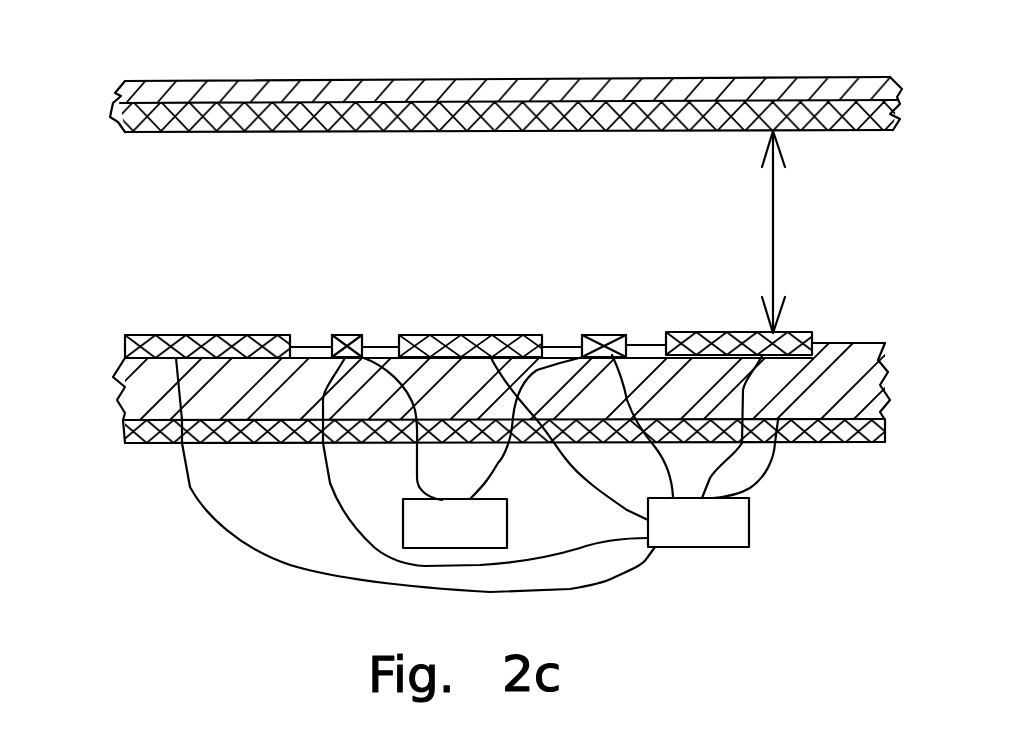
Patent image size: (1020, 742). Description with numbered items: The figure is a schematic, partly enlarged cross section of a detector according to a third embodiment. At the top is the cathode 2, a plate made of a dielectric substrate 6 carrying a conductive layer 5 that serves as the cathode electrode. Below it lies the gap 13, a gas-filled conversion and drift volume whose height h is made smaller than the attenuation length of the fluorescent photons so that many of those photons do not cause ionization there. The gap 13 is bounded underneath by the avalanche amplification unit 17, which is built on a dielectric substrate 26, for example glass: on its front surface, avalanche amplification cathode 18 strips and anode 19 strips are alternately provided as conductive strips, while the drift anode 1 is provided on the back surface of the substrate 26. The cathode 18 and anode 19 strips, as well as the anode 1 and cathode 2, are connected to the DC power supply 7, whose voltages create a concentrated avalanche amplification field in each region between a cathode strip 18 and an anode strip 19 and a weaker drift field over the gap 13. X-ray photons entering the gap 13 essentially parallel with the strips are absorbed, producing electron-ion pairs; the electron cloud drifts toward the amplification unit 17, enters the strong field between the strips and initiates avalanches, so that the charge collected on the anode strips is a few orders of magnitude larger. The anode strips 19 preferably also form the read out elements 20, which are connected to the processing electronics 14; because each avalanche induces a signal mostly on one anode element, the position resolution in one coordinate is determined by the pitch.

The anode 1 is at (503, 427).
The cathode 2 is at (467, 118).
The conductive layer 5 is at (508, 154).
The dielectric substrate 6 is at (508, 65).
The DC power supply 7 is at (698, 522).
The gap 13 is at (589, 224).
The processing electronics 14 is at (455, 523).
The avalanche amplification unit 17 is at (97, 325).
The avalanche amplification cathode strips 18 is at (468, 303).
The avalanche amplification anode strips 19 is at (517, 317).
The read out elements 20 is at (473, 305).
The dielectric substrate 26 is at (871, 321).
The height h is at (780, 232).